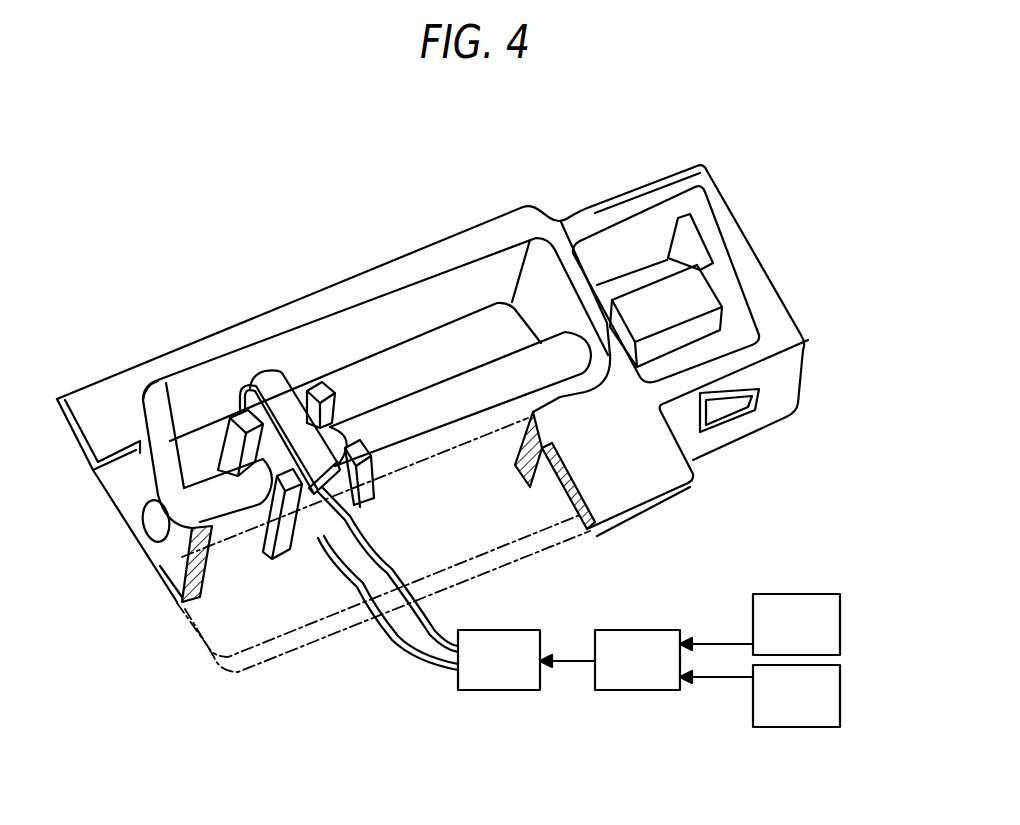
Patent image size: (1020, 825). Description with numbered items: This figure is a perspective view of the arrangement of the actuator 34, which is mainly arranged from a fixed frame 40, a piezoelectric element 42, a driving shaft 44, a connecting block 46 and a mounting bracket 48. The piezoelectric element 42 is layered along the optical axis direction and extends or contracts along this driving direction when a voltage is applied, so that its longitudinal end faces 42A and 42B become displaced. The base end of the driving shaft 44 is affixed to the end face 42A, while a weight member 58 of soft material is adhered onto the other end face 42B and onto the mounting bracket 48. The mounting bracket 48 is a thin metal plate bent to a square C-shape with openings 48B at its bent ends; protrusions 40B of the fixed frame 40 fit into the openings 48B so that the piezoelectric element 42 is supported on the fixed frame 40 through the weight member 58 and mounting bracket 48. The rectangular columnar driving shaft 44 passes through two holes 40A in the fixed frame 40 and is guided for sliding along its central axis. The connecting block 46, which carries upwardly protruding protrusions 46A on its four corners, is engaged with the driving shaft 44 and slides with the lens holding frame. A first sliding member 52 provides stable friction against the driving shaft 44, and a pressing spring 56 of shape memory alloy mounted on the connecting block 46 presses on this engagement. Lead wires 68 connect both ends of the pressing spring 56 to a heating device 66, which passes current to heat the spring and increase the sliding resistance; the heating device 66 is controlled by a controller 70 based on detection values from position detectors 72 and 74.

The actuator 34 is at (350, 178).
The fixed frame 40 is at (480, 258).
The holes 40A is at (145, 515).
The protrusions 40B is at (738, 407).
The piezoelectric element 42 is at (658, 305).
The end face 42A is at (563, 237).
The end face 42B is at (687, 215).
The driving shaft 44 is at (450, 397).
The connecting block 46 is at (170, 357).
The protrusions 46A is at (208, 425).
The mounting bracket 48 is at (718, 195).
The openings 48B is at (722, 425).
The first sliding member 52 is at (313, 387).
The pressing spring 56 is at (270, 387).
The weight member 58 is at (753, 280).
The heating device 66 is at (500, 693).
The lead wires 68 is at (437, 633).
The controller 70 is at (628, 693).
The position detector 72 is at (840, 622).
The position detector 74 is at (840, 690).